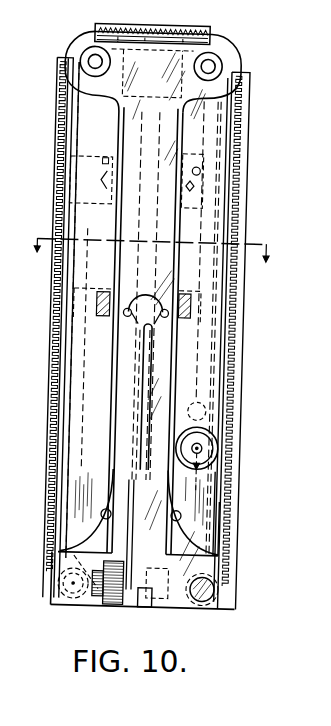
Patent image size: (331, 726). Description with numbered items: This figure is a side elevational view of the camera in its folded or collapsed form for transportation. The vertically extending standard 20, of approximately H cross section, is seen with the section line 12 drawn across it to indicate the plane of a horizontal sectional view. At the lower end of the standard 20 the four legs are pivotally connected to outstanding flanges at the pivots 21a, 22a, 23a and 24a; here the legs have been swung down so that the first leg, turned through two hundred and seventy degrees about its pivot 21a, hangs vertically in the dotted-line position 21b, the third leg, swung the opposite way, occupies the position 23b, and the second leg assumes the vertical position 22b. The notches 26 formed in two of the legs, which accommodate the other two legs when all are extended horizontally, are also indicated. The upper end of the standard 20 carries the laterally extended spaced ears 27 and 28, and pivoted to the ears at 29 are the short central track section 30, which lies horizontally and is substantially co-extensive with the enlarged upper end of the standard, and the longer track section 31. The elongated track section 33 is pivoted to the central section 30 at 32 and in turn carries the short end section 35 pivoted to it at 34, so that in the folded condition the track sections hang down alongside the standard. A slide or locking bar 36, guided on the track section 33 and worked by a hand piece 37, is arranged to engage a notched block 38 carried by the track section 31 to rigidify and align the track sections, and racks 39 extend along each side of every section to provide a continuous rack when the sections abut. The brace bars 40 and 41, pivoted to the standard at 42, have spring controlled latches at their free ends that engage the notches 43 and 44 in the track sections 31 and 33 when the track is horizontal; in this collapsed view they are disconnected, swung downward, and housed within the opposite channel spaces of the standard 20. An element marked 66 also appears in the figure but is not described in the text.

The section line 12 is at (152, 247).
The standard 20 is at (172, 203).
The pivot of leg 21 21a is at (73, 600).
The folded position of leg 21 21b is at (80, 300).
The pivot of leg 22 22a is at (110, 604).
The folded position of leg 22 22b is at (143, 378).
The pivot of leg 23 23a is at (230, 610).
The folded position of leg 23 23b is at (208, 307).
The pivot of leg 24 24a is at (167, 604).
The notch 26 is at (59, 536).
The ear 27 is at (80, 36).
The ear 28 is at (230, 47).
The pivot 29 is at (93, 62).
The short track section 30 is at (162, 26).
The longer track section 31 is at (56, 182).
The pivot 32 is at (214, 65).
The track section 33 is at (243, 206).
The pivot 34 is at (203, 447).
The short end section 35 is at (213, 483).
The locking bar 36 is at (222, 395).
The hand piece 37 is at (203, 408).
The notched block 38 is at (99, 189).
The rack 39 is at (190, 33).
The brace bar 40 is at (137, 347).
The brace bar 41 is at (162, 357).
The pivot 42 is at (137, 303).
The notch 43 is at (105, 166).
The notch 44 is at (185, 168).
The rack strip 66 is at (240, 128).